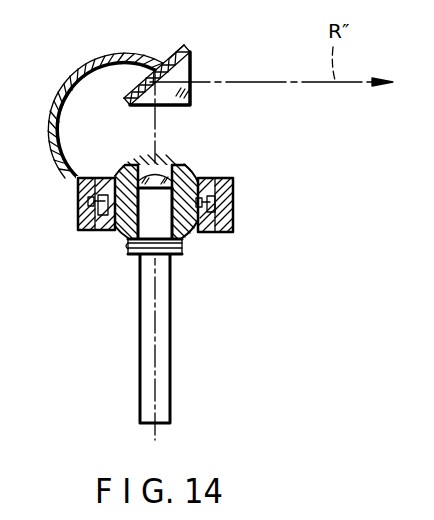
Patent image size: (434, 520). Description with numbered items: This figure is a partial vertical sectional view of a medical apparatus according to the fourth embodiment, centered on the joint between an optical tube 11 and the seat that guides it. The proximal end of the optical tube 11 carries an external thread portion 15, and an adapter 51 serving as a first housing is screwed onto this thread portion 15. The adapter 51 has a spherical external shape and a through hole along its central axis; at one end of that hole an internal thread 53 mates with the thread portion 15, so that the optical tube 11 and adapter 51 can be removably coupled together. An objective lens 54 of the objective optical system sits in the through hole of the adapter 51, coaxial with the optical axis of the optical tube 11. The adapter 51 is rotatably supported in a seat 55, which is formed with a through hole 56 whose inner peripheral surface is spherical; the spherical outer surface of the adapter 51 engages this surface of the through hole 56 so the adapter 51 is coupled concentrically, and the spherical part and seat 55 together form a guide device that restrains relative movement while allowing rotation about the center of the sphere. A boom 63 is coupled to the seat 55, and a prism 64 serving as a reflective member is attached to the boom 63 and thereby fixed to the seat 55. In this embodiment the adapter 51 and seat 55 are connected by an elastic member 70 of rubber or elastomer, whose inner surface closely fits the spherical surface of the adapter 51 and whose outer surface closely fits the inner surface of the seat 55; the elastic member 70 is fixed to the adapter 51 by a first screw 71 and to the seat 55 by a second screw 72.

The optical tube 11 is at (140, 357).
The external thread portion 15 is at (190, 245).
The adapter 51 is at (118, 231).
The internal thread 53 is at (132, 257).
The objective lens 54 is at (162, 172).
The seat 55 is at (78, 212).
The through hole 56 is at (131, 166).
The boom 63 is at (66, 86).
The prism 64 is at (193, 63).
The elastic member 70 is at (218, 180).
The first screw 71 is at (234, 198).
The second screw 72 is at (88, 200).